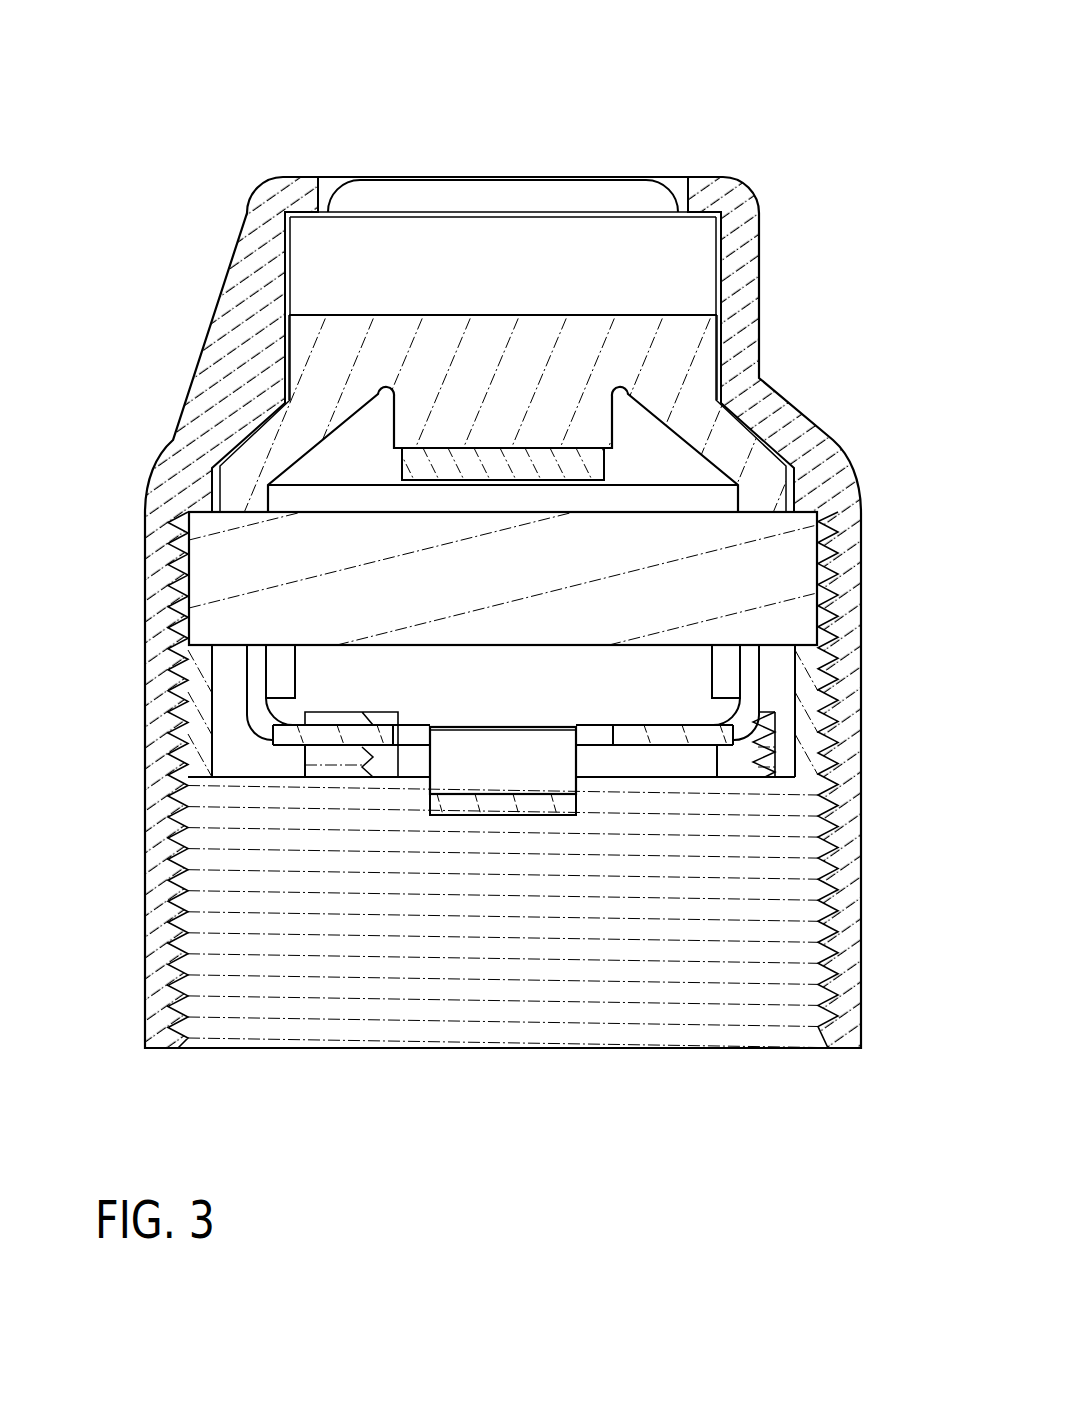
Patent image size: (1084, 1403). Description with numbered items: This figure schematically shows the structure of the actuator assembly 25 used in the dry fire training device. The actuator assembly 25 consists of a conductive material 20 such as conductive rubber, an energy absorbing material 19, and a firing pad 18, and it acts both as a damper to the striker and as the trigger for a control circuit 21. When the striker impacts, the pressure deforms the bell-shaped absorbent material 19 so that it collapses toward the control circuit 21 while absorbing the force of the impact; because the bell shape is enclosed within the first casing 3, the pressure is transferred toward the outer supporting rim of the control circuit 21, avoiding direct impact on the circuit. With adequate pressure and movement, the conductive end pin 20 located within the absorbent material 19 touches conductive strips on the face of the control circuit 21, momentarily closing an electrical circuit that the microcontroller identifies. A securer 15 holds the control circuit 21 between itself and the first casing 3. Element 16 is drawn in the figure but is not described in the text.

The first casing 3 is at (145, 868).
The securer 15 is at (192, 709).
The sensor element 16 is at (507, 817).
The firing pad 18 is at (288, 270).
The energy absorbing material 19 is at (288, 363).
The conductive material 20 is at (604, 462).
The control circuit 21 is at (818, 586).
The actuator assembly 25 is at (782, 126).